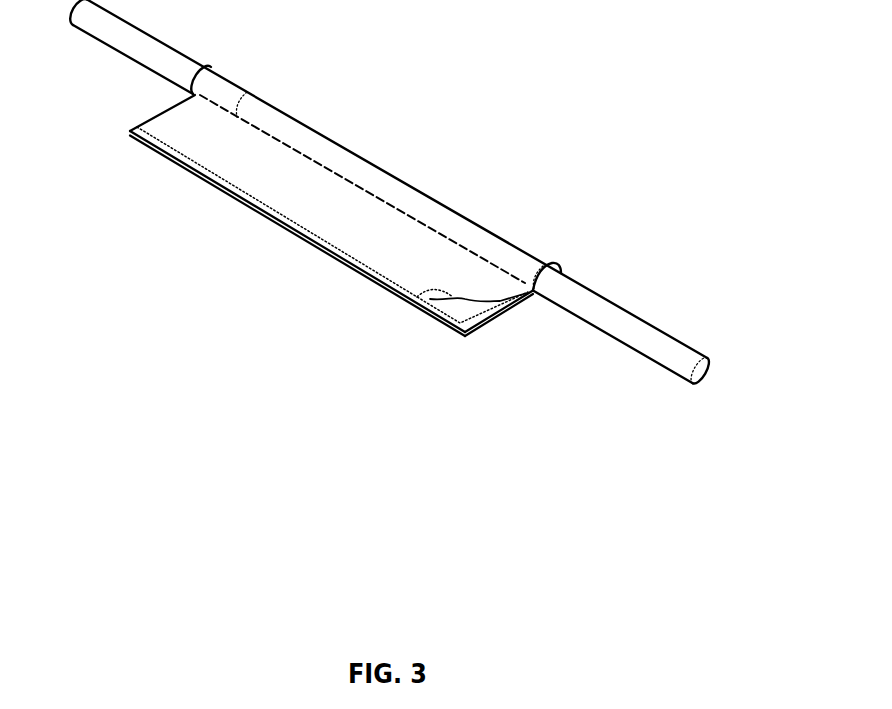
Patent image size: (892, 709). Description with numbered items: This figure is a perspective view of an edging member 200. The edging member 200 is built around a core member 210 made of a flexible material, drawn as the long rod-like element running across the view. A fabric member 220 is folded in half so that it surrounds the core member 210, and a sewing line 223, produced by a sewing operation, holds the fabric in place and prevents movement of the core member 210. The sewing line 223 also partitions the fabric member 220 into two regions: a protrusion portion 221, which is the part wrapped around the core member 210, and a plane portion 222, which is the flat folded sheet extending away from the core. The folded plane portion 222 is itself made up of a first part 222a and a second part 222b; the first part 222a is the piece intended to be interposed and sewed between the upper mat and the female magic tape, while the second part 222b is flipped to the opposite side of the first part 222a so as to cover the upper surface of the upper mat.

The edging member 200 is at (389, 314).
The core member 210 is at (615, 323).
The fabric member 220 is at (345, 247).
The protrusion portion 221 is at (357, 165).
The plane portion 222 is at (332, 300).
The first part 222a is at (415, 298).
The second part 222b is at (353, 373).
The sewing line 223 is at (247, 89).